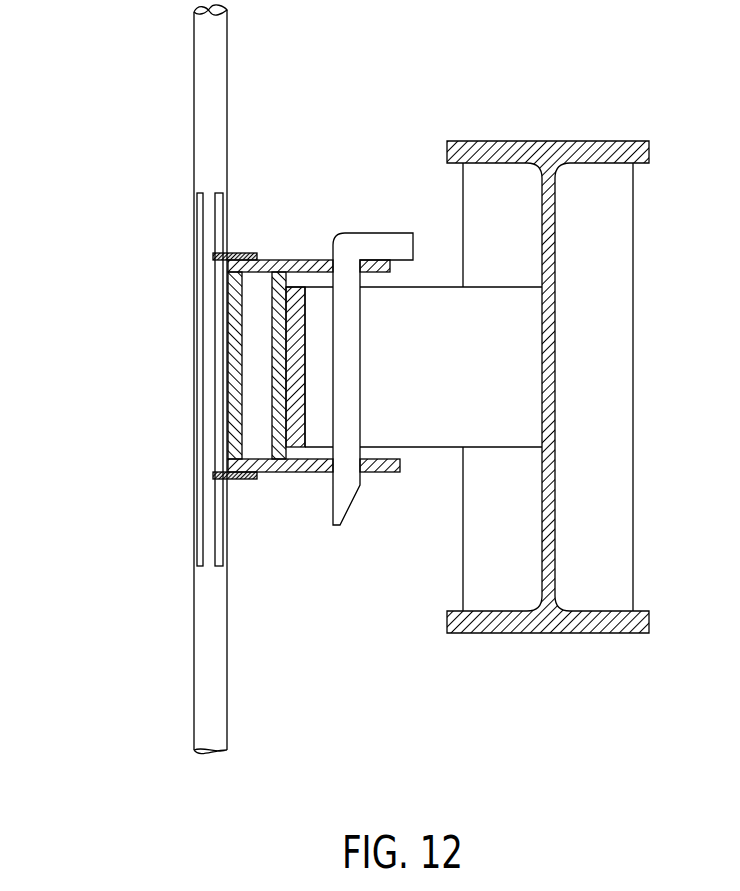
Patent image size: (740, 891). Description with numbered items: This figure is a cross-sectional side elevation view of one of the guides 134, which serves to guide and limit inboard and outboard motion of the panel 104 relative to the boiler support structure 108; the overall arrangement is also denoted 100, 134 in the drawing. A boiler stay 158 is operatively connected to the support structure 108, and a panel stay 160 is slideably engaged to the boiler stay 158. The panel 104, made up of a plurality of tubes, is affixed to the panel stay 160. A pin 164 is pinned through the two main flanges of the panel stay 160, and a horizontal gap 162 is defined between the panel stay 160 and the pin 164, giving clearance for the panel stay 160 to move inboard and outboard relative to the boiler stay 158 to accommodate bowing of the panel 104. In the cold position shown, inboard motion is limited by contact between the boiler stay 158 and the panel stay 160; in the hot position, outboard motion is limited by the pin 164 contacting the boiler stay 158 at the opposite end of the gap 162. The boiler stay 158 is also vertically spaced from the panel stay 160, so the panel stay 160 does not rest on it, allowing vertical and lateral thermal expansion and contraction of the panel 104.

The pipe support system 100 is at (140, 164).
The panel 104 is at (194, 52).
The support structure 108 is at (594, 141).
The guide 134 is at (308, 333).
The boiler stay 158 is at (294, 448).
The panel stay 160 is at (268, 262).
The horizontal gap 162 is at (320, 307).
The pin 164 is at (377, 247).